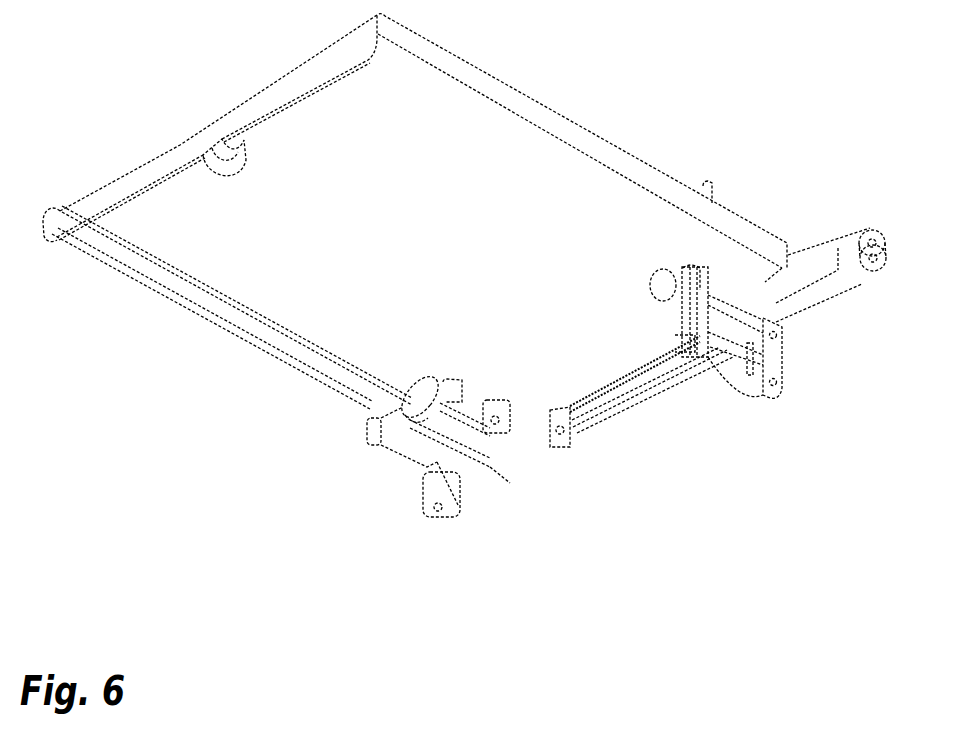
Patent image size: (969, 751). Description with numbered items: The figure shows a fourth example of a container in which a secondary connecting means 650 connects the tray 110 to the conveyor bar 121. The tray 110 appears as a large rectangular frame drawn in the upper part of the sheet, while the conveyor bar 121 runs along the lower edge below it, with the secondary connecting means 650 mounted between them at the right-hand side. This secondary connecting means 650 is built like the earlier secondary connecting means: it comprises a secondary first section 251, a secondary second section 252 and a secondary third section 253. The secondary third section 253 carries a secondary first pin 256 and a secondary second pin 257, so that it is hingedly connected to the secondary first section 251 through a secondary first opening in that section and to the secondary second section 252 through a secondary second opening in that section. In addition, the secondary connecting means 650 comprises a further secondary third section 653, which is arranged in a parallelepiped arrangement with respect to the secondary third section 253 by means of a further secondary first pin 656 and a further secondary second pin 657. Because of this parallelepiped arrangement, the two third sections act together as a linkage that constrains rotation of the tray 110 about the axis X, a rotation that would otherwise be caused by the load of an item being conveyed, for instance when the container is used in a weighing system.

The tray 110 is at (538, 192).
The conveyor bar 121 is at (510, 470).
The secondary first section 251 is at (711, 288).
The secondary second section 252 is at (778, 333).
The secondary third section 253 is at (749, 322).
The secondary first pin 256 is at (707, 297).
The secondary second pin 257 is at (784, 338).
The secondary connecting means 650 is at (735, 395).
The further secondary third section 653 is at (728, 358).
The further secondary first pin 656 is at (707, 343).
The further secondary second pin 657 is at (784, 385).